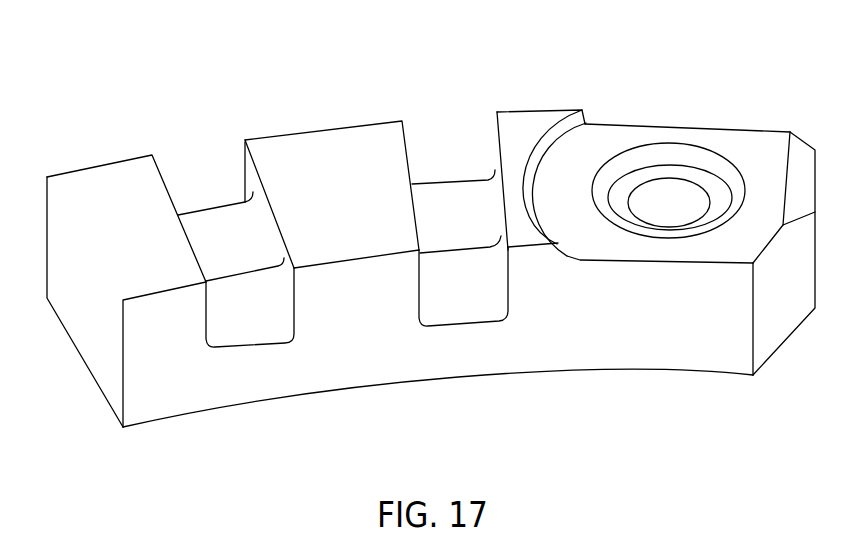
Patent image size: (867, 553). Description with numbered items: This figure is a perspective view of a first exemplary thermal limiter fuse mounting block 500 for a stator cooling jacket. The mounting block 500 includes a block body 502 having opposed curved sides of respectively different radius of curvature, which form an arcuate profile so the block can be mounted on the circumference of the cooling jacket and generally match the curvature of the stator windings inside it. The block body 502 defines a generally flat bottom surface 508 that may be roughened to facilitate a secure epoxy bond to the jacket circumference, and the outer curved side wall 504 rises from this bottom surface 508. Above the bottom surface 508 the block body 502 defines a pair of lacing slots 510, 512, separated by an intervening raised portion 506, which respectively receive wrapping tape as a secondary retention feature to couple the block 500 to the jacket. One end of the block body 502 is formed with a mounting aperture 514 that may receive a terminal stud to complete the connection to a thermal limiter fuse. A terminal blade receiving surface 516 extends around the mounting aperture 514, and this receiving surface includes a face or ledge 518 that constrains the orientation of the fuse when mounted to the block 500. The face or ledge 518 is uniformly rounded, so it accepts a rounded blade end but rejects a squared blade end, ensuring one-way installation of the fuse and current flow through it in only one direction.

The thermal limiter fuse mounting block 500 is at (733, 50).
The block body 502 is at (585, 348).
The front face 504 is at (384, 368).
The raised block 506 is at (339, 123).
The bottom surface 508 is at (273, 401).
The lacing slot 510 is at (203, 183).
The lacing slot 512 is at (453, 157).
The mounting aperture 514 is at (669, 200).
The terminal blade receiving surface 516 is at (753, 136).
The face or ledge 518 is at (571, 126).